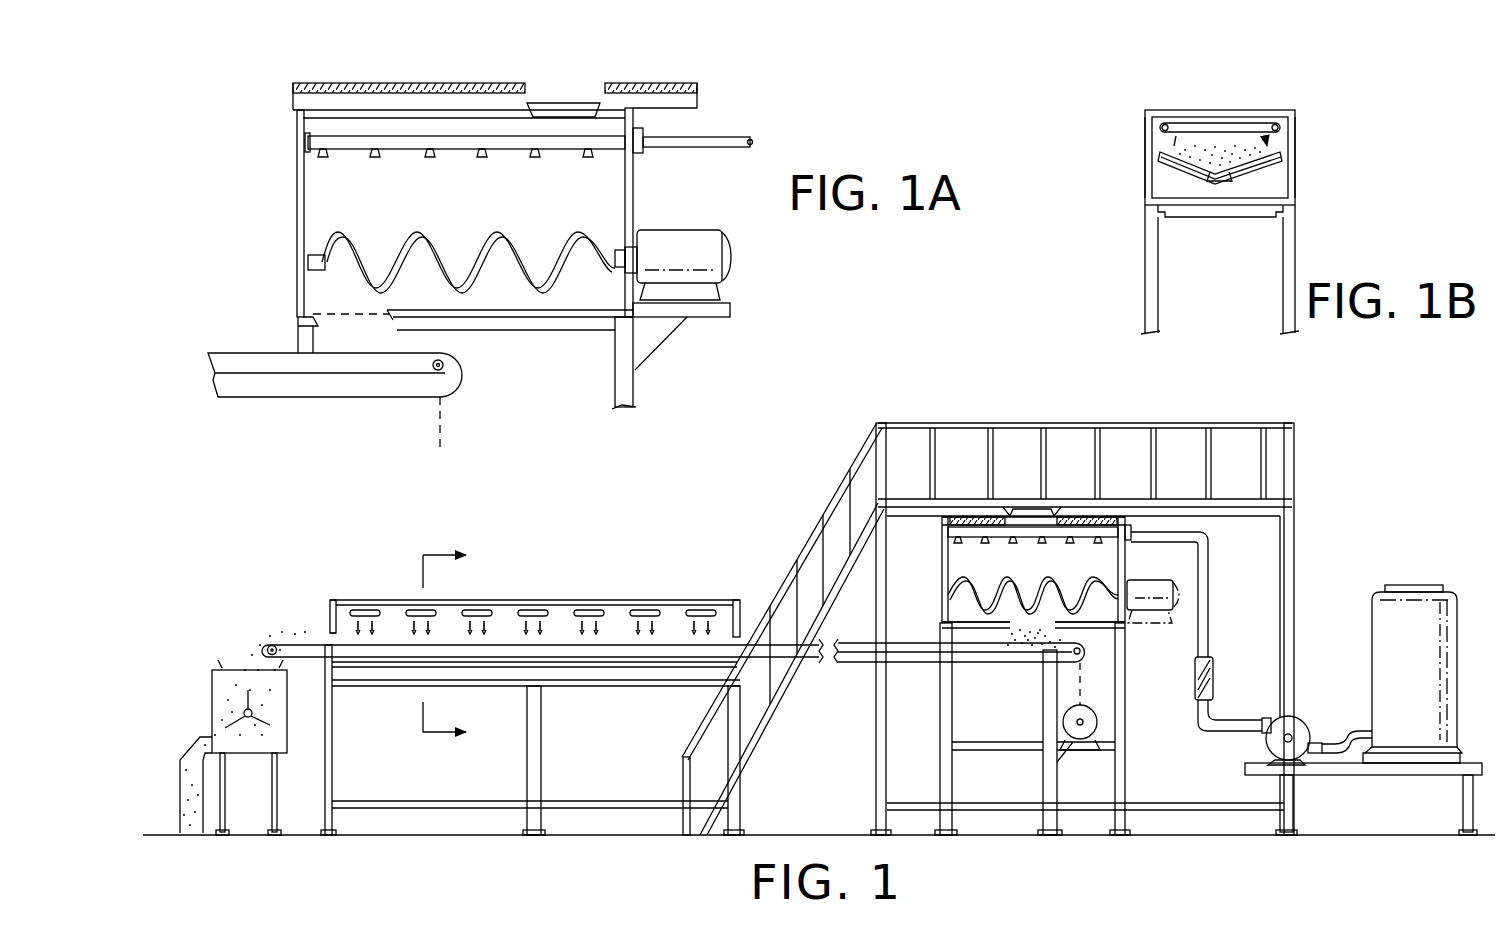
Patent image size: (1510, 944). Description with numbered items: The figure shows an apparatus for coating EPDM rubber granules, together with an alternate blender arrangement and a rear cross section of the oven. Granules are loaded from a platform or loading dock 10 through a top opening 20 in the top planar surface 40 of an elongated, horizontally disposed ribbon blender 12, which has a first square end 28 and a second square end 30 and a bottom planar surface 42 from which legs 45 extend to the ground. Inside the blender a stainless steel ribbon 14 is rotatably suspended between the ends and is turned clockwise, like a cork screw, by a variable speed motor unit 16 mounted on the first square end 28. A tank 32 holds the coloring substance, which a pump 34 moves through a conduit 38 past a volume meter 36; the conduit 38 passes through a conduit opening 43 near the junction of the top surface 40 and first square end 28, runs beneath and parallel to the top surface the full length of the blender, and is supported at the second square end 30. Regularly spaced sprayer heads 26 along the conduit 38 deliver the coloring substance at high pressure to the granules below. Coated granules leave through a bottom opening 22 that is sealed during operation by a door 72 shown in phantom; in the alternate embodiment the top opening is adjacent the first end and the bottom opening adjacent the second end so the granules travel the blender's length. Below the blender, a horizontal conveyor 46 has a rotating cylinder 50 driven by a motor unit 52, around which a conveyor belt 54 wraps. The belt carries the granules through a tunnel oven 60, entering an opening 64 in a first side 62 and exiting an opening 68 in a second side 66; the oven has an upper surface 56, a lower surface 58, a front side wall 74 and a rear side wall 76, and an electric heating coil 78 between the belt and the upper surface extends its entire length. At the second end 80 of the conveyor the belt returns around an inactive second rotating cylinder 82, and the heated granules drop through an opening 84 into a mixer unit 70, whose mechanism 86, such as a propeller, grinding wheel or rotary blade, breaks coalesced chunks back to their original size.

In FIG. 1A, the loading dock 10 is at (331, 79).
In FIG. 1, the loading dock 10 is at (1240, 496).
In FIG. 1A, the ribbon blender 12 is at (282, 178).
In FIG. 1, the ribbon blender 12 is at (930, 553).
In FIG. 1A, the ribbon 14 is at (535, 226).
In FIG. 1, the ribbon 14 is at (1080, 575).
In FIG. 1A, the motor unit 16 is at (708, 263).
In FIG. 1, the motor unit 16 is at (1162, 590).
In FIG. 1A, the opening 20 is at (566, 106).
In FIG. 1, the opening 20 is at (1030, 515).
In FIG. 1A, the bottom opening 22 is at (335, 316).
In FIG. 1, the bottom opening 22 is at (1022, 631).
In FIG. 1A, the sprayer heads 26 is at (535, 158).
In FIG. 1, the sprayer heads 26 is at (1042, 541).
In FIG. 1A, the first square end 28 is at (636, 195).
In FIG. 1, the first square end 28 is at (1125, 560).
In FIG. 1A, the second square end 30 is at (297, 222).
In FIG. 1, the second square end 30 is at (942, 566).
In FIG. 1, the tank 32 is at (1438, 612).
In FIG. 1, the pump 34 is at (1298, 732).
In FIG. 1, the volume meter 36 is at (1213, 683).
In FIG. 1A, the conduit 38 is at (725, 148).
In FIG. 1, the conduit 38 is at (1208, 728).
In FIG. 1A, the top planar surface 40 is at (453, 110).
In FIG. 1, the top planar surface 40 is at (1100, 517).
In FIG. 1A, the bottom planar surface 42 is at (528, 331).
In FIG. 1, the bottom planar surface 42 is at (1103, 628).
In FIG. 1, the conduit opening 43 is at (1131, 535).
In FIG. 1A, the legs 45 is at (633, 400).
In FIG. 1, the legs 45 is at (940, 779).
In FIG. 1A, the conveyor 46 is at (320, 403).
In FIG. 1B, the conveyor 46 is at (1280, 182).
In FIG. 1, the conveyor 46 is at (838, 666).
In FIG. 1A, the rotating cylinder 50 is at (432, 368).
In FIG. 1, the rotating cylinder 50 is at (1086, 651).
In FIG. 1, the motor unit 52 is at (1085, 740).
In FIG. 1B, the conveyor belt 54 is at (1245, 190).
In FIG. 1, the conveyor belt 54 is at (790, 642).
In FIG. 1B, the upper surface 56 is at (1222, 113).
In FIG. 1, the upper surface 56 is at (625, 600).
In FIG. 1, the lower surface 58 is at (572, 686).
In FIG. 1B, the tunnel oven 60 is at (1303, 122).
In FIG. 1, the tunnel oven 60 is at (553, 594).
In FIG. 1, the first side 62 is at (742, 676).
In FIG. 1, the opening 64 is at (735, 636).
In FIG. 1, the second side 66 is at (416, 635).
In FIG. 1, the opening 68 is at (330, 634).
In FIG. 1, the mixer unit 70 is at (208, 699).
In FIG. 1A, the door 72 is at (335, 300).
In FIG. 1B, the front side wall 74 is at (1295, 165).
In FIG. 1B, the rear side wall 76 is at (1145, 165).
In FIG. 1B, the heating coil 78 is at (1190, 122).
In FIG. 1, the heating coil 78 is at (490, 609).
In FIG. 1, the second end 80 is at (265, 638).
In FIG. 1, the second rotating cylinder 82 is at (276, 652).
In FIG. 1, the opening 84 is at (232, 665).
In FIG. 1, the mechanism 86 is at (258, 730).